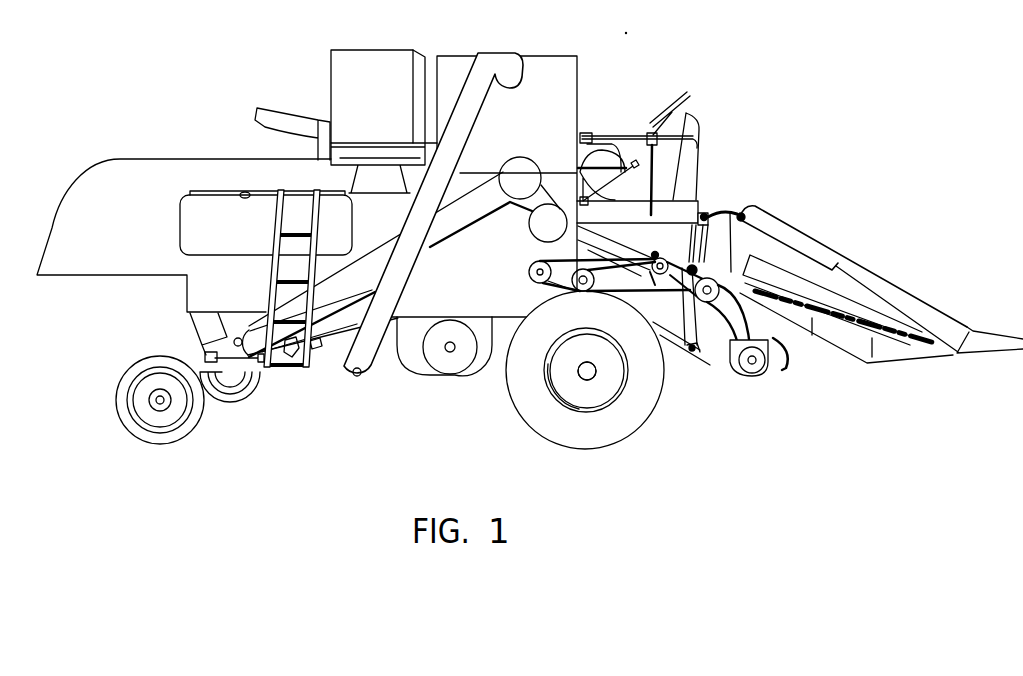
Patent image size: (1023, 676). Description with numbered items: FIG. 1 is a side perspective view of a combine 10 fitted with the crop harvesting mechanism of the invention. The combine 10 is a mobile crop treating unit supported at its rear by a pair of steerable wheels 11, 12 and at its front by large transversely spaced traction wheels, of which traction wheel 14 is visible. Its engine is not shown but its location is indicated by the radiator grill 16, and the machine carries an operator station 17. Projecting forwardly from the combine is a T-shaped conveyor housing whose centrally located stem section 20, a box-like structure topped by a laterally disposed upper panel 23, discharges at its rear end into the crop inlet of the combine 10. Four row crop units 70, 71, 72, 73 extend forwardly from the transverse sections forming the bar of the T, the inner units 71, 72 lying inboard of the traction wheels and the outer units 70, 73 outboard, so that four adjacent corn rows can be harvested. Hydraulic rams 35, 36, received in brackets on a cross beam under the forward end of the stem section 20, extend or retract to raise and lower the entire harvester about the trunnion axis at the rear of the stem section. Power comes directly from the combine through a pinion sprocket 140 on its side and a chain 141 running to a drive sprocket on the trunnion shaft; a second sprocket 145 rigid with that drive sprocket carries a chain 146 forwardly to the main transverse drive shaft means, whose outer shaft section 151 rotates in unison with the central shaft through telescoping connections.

The combine 10 is at (548, 78).
The steerable wheel 11 is at (241, 393).
The steerable wheel 12 is at (177, 435).
The traction wheel 14 is at (623, 427).
The radiator grill 16 is at (398, 58).
The operator station 17 is at (690, 158).
The stem section 20 is at (656, 305).
The upper panel 23 is at (602, 254).
The hydraulic ram 35 is at (665, 355).
The hydraulic ram 36 is at (677, 352).
The row crop unit 70 is at (697, 243).
The row crop unit 71 is at (705, 210).
The row crop unit 72 is at (731, 211).
The row crop unit 73 is at (792, 233).
The pinion sprocket 140 is at (538, 282).
The chain 141 is at (556, 290).
The second sprocket 145 is at (580, 292).
The chain 146 is at (602, 283).
The outer shaft section 151 is at (705, 267).